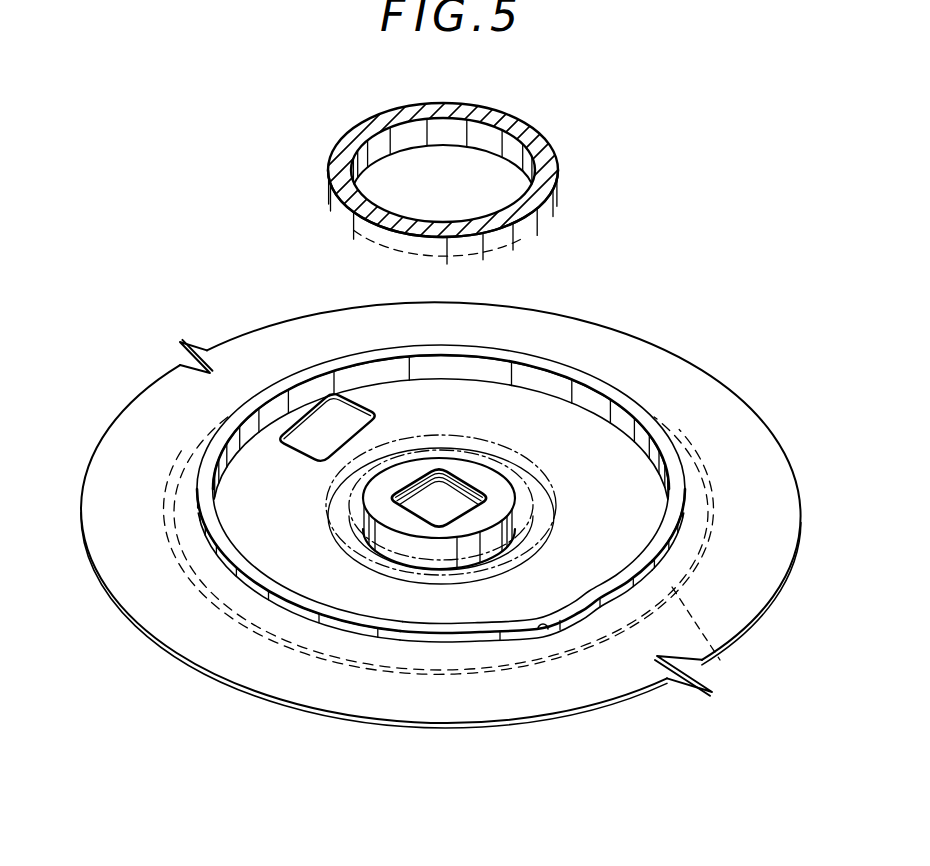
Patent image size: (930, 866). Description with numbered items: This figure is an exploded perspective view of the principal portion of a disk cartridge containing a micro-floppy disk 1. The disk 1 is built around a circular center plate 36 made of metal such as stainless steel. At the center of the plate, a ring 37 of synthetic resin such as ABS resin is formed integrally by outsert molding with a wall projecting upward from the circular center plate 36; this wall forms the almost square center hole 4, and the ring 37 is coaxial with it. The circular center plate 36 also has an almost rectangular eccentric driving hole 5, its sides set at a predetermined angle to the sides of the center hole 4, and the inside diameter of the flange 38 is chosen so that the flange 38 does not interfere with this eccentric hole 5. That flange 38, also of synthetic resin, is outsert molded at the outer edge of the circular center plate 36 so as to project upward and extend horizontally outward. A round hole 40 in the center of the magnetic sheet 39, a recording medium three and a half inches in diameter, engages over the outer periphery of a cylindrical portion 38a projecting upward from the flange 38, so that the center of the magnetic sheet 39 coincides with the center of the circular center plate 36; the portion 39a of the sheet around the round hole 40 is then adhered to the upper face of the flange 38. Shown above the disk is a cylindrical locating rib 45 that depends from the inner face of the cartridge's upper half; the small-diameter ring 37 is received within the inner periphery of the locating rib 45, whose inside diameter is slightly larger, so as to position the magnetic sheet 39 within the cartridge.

The floppy disk 1 is at (441, 482).
The center hole 4 is at (462, 483).
The eccentric driving hole 5 is at (376, 415).
The circular center plate 36 is at (595, 453).
The ring 37 is at (446, 485).
The flange 38 is at (722, 664).
The cylindrical portion 38a is at (657, 432).
The magnetic sheet 39 is at (723, 424).
The portion of the recording medium 39a is at (697, 497).
The round hole 40 is at (548, 630).
The locating rib 45 is at (560, 213).